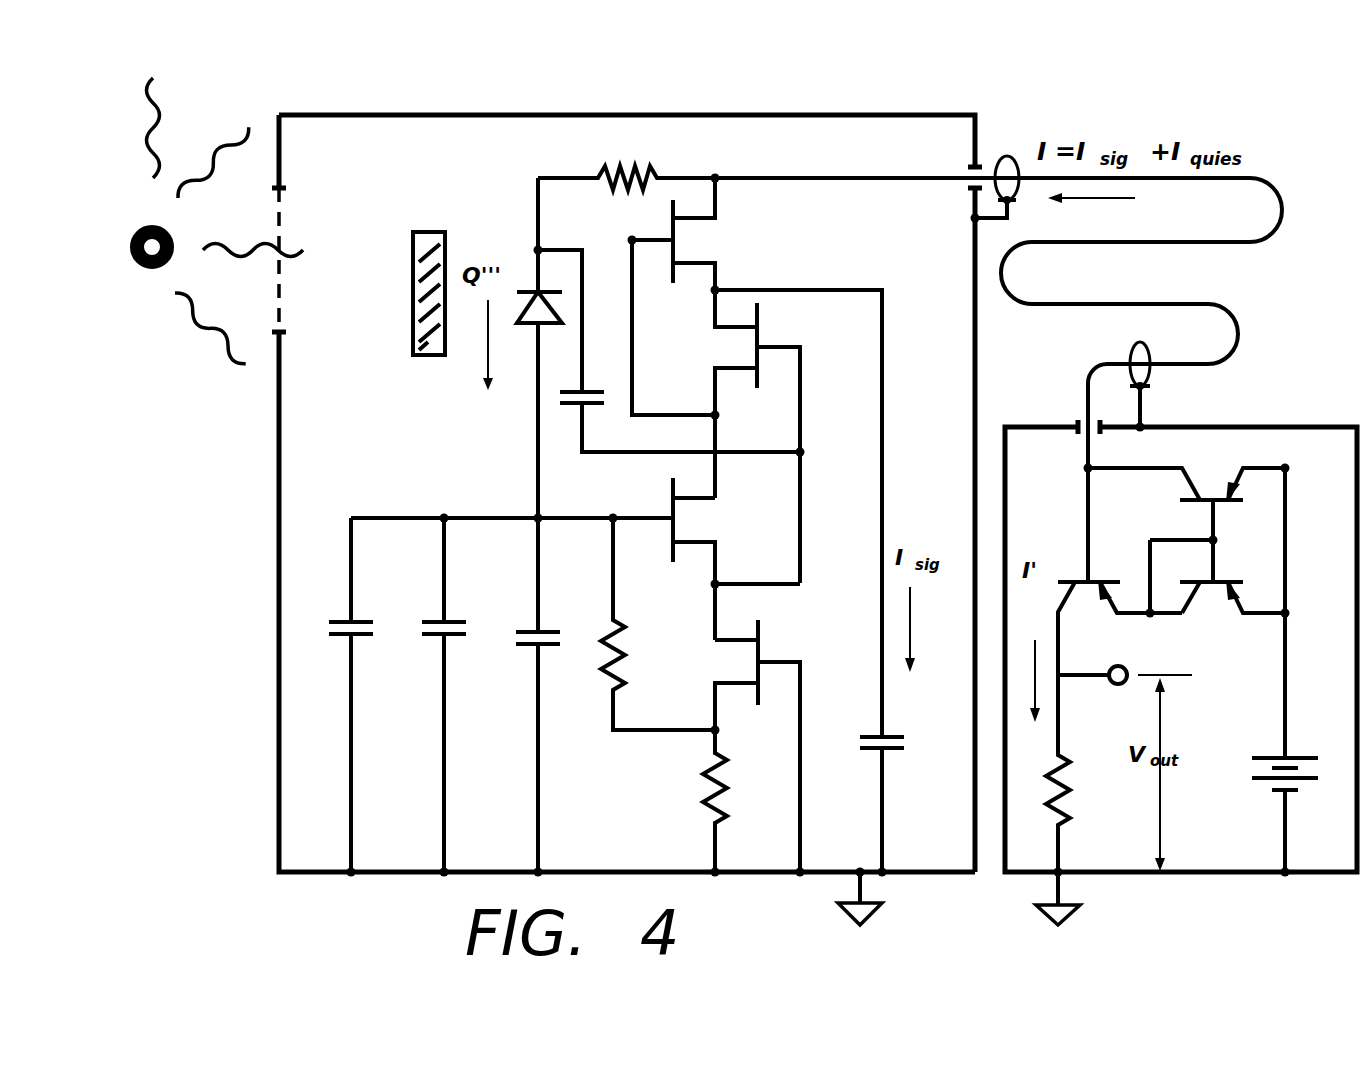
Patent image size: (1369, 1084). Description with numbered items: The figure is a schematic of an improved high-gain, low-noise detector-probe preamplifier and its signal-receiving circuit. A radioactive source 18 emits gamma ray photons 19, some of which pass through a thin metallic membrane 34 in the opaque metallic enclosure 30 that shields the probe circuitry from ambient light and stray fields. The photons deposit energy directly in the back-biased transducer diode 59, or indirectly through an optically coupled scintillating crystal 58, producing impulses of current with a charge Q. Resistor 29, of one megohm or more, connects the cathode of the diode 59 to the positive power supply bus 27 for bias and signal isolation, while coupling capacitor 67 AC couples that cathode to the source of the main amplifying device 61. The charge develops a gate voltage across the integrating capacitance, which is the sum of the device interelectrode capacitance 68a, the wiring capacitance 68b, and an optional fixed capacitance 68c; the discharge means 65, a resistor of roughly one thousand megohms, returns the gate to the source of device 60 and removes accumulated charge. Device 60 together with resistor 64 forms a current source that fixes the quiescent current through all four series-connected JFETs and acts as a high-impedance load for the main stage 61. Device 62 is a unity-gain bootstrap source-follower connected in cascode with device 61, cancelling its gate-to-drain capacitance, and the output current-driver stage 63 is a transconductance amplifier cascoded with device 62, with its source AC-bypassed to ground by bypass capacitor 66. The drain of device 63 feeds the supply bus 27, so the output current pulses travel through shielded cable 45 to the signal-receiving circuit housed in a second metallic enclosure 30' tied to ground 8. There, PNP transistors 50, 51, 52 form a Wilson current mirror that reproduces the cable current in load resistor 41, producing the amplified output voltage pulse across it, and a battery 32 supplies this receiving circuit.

The circuit common or ground potential 8 is at (877, 909).
The radioactive source 18 is at (140, 268).
The gamma ray photons 19 is at (248, 223).
The power supply bus 27 is at (843, 160).
The resistor 29 is at (626, 164).
The metallic enclosure 30 is at (578, 493).
The metallic enclosure 30' is at (1181, 681).
The battery 32 is at (1278, 672).
The thin metallic membrane 34 is at (300, 258).
The load resistor 41 is at (1078, 800).
The shielded cable 45 is at (1138, 294).
The PNP bipolar junction transistor 50 is at (1120, 551).
The PNP bipolar junction transistor 51 is at (1220, 590).
The PNP bipolar junction transistor 52 is at (1189, 502).
The scintillating crystal 58 is at (420, 272).
The transducer diode 59 is at (531, 405).
The amplifying device 60 is at (738, 748).
The main amplifying device 61 is at (575, 559).
The amplifying device 62 is at (736, 436).
The output current-driver stage 63 is at (693, 299).
The resistor 64 is at (686, 803).
The discharge means 65 is at (658, 624).
The bypass capacitor 66 is at (821, 583).
The coupling capacitor 67 is at (671, 353).
The device interelectrode capacitance 68a is at (519, 754).
The wiring capacitance 68b is at (427, 697).
The fixed capacitance 68c is at (335, 697).